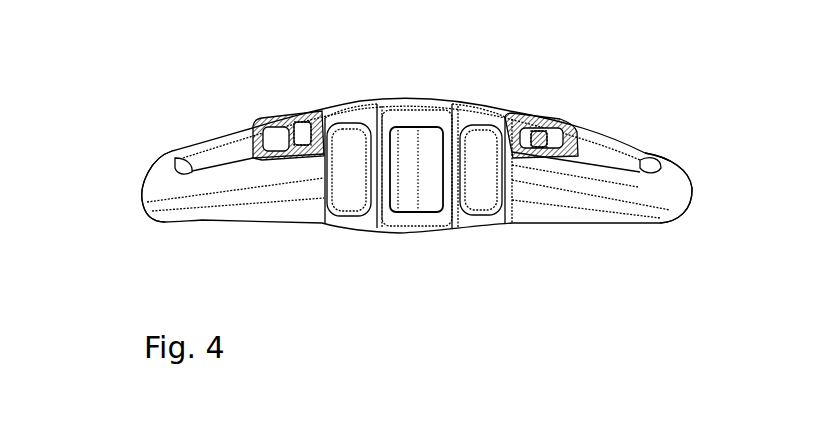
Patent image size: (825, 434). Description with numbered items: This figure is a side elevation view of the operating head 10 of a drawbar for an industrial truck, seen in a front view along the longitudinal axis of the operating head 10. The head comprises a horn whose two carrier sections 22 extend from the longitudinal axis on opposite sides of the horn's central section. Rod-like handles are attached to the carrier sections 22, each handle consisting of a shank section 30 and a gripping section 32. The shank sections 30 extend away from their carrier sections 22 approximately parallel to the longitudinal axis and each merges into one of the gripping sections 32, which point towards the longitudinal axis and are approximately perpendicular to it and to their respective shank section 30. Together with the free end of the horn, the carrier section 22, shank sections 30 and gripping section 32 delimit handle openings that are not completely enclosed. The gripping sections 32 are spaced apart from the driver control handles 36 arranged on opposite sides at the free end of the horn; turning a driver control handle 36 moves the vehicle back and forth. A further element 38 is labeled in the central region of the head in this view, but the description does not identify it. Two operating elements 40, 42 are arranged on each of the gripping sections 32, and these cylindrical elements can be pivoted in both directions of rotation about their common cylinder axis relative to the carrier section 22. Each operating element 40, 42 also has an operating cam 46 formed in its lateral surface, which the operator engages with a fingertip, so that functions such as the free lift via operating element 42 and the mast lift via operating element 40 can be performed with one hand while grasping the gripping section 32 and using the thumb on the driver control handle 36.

The operating head 10 is at (653, 117).
The carrier section 22 is at (222, 143).
The shank section 30 is at (163, 162).
The gripping section 32 is at (243, 198).
The driver control handle 36 is at (343, 185).
The central slot 38 is at (418, 198).
The operating element 40 is at (556, 141).
The operating element 42 is at (513, 127).
The operating cam 46 is at (517, 119).